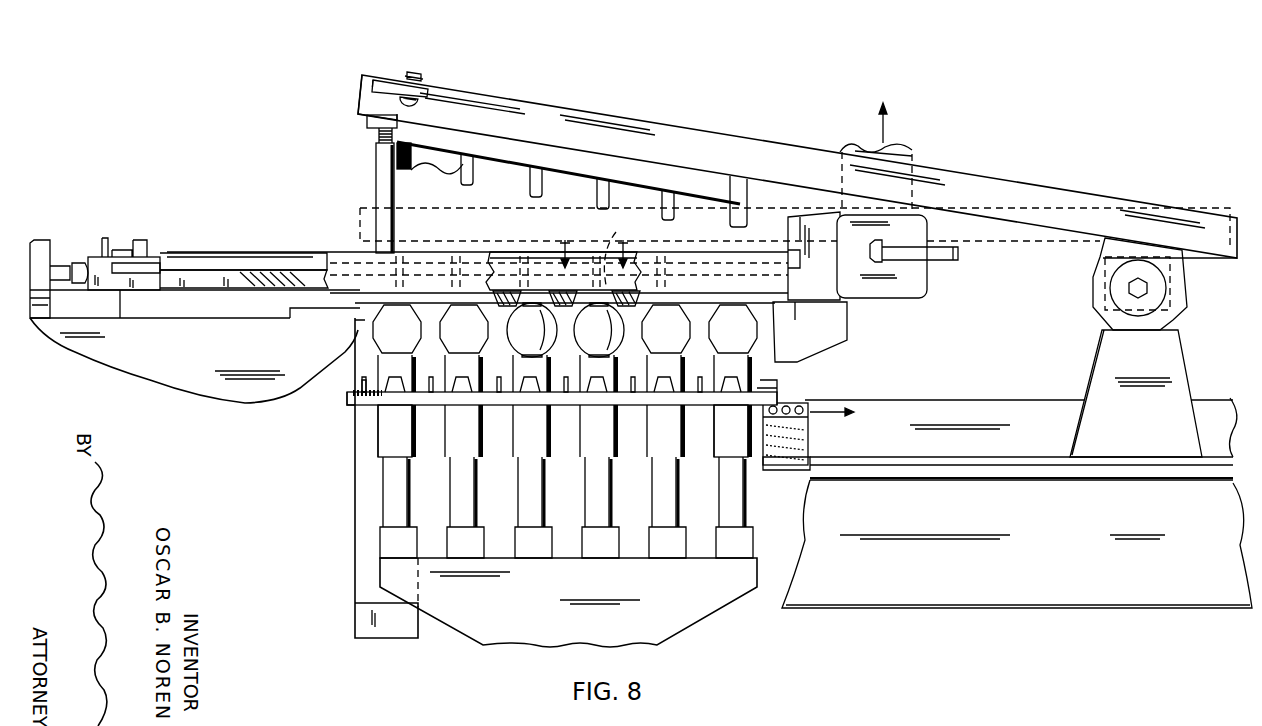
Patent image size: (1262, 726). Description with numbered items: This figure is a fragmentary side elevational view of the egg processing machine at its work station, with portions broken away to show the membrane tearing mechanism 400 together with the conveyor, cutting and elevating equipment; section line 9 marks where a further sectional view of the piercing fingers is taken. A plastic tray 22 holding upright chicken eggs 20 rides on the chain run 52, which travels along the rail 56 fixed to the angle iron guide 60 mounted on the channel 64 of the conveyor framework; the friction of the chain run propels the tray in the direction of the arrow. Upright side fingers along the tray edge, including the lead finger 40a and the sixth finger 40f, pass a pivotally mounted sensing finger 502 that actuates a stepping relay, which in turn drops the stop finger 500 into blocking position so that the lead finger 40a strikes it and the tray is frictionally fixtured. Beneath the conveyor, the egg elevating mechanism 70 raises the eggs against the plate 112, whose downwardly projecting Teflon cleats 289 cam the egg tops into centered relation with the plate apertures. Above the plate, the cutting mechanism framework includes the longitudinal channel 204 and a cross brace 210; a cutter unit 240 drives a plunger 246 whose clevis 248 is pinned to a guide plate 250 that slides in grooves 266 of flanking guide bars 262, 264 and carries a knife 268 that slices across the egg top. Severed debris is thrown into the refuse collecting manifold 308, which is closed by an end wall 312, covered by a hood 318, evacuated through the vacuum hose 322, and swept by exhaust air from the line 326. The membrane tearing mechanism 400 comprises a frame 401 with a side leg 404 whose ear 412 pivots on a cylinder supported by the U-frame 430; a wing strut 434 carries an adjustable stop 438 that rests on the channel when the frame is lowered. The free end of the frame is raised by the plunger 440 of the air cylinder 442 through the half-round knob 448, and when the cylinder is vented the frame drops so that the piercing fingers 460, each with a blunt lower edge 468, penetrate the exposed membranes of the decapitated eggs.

The section line 9 is at (593, 249).
The chicken egg 20 is at (510, 341).
The plastic tray 22 is at (356, 407).
The lead side finger 40a is at (733, 395).
The side finger 40f is at (396, 395).
The chain run 52 is at (808, 434).
The rail 56 is at (798, 471).
The angle iron guide 60 is at (1205, 398).
The channel 64 is at (1143, 610).
The egg elevating mechanism 70 is at (711, 614).
The plate 112 is at (440, 313).
The longitudinal channel 204 is at (240, 398).
The cross brace 210 is at (306, 310).
The cutter unit 240 is at (40, 240).
The plunger 246 is at (70, 262).
The clevis 248 is at (118, 292).
The guide plate 250 is at (162, 258).
The guide bar 262 is at (490, 252).
The guide bar 264 is at (423, 251).
The groove 266 is at (317, 268).
The knife 268 is at (247, 290).
The Teflon cleat 289 is at (397, 329).
The refuse collecting manifold 308 is at (927, 300).
The end wall 312 is at (883, 290).
The hood 318 is at (800, 214).
The vacuum hose 322 is at (908, 153).
The exhaust line 326 is at (946, 262).
The membrane tearing mechanism 400 is at (302, 104).
The pivotally mounted frame 401 is at (543, 206).
The side leg 404 is at (1043, 208).
The ear 412 is at (1180, 298).
The U-frame 430 is at (1185, 355).
The wing strut 434 is at (425, 77).
The adjustable stop 438 is at (420, 104).
The plunger 440 is at (375, 178).
The air cylinder 442 is at (354, 476).
The half-round knob 448 is at (367, 121).
The piercing finger 460 is at (572, 184).
The lower edge 468 is at (462, 196).
The stop finger 500 is at (777, 396).
The sensing finger 502 is at (352, 393).